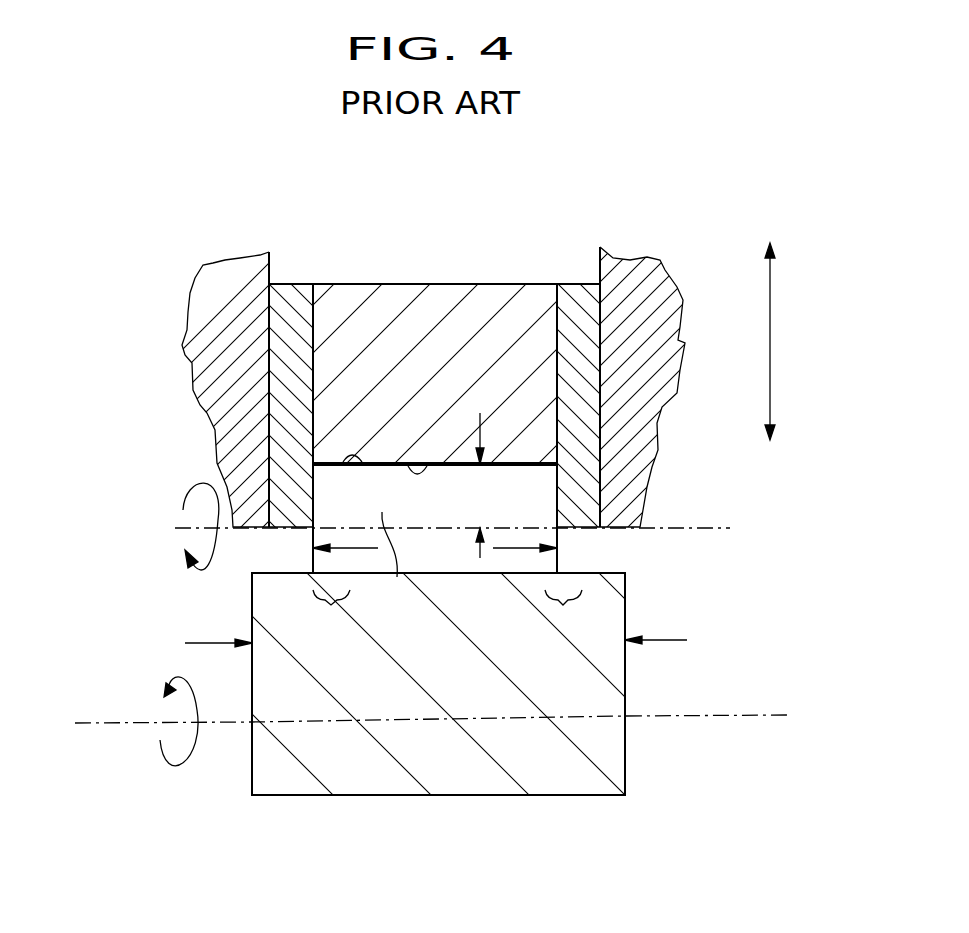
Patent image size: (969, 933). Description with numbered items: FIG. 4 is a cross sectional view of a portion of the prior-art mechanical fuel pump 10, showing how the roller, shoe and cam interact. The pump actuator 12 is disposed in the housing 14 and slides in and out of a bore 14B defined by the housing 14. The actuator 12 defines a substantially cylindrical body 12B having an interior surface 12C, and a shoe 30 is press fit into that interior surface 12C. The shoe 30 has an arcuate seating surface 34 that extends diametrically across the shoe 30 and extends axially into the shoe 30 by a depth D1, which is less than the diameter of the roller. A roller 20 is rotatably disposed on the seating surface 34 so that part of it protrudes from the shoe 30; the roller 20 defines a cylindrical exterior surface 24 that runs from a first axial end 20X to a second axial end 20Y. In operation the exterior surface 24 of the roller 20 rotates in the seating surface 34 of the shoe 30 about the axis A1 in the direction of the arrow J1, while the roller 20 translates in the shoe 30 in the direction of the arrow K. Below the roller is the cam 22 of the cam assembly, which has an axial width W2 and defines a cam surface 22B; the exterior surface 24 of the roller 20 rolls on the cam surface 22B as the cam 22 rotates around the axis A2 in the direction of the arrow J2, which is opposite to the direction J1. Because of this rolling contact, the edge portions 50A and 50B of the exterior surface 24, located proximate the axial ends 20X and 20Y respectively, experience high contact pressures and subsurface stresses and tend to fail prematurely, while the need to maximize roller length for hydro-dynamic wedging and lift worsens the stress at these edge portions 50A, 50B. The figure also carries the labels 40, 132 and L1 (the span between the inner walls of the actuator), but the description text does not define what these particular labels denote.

The mechanical fuel pump 10 is at (116, 316).
The pump actuator 12 is at (582, 280).
The substantially cylindrical body 12B is at (288, 360).
The interior surface 12C is at (313, 322).
The housing 14 is at (657, 272).
The bore 14B is at (270, 268).
The roller 20 is at (558, 498).
The first axial end 20X is at (313, 463).
The second axial end 20Y is at (562, 472).
The cam 22 is at (625, 612).
The cam surface 22B is at (590, 571).
The cylindrical exterior surface 24 is at (350, 452).
The shoe 30 is at (458, 305).
The seating surface 34 is at (432, 460).
The corner portion 40 is at (560, 462).
The edge portion 50A is at (332, 605).
The edge portion 50B is at (563, 605).
The top surface of workpiece 132 is at (401, 637).
The axis A1 is at (700, 522).
The axis A2 is at (795, 724).
The arrow J1 is at (190, 487).
The arrow J2 is at (173, 767).
The arrow K is at (773, 307).
The length L1 is at (513, 548).
The depth D1 is at (480, 413).
The axial width W2 is at (670, 640).